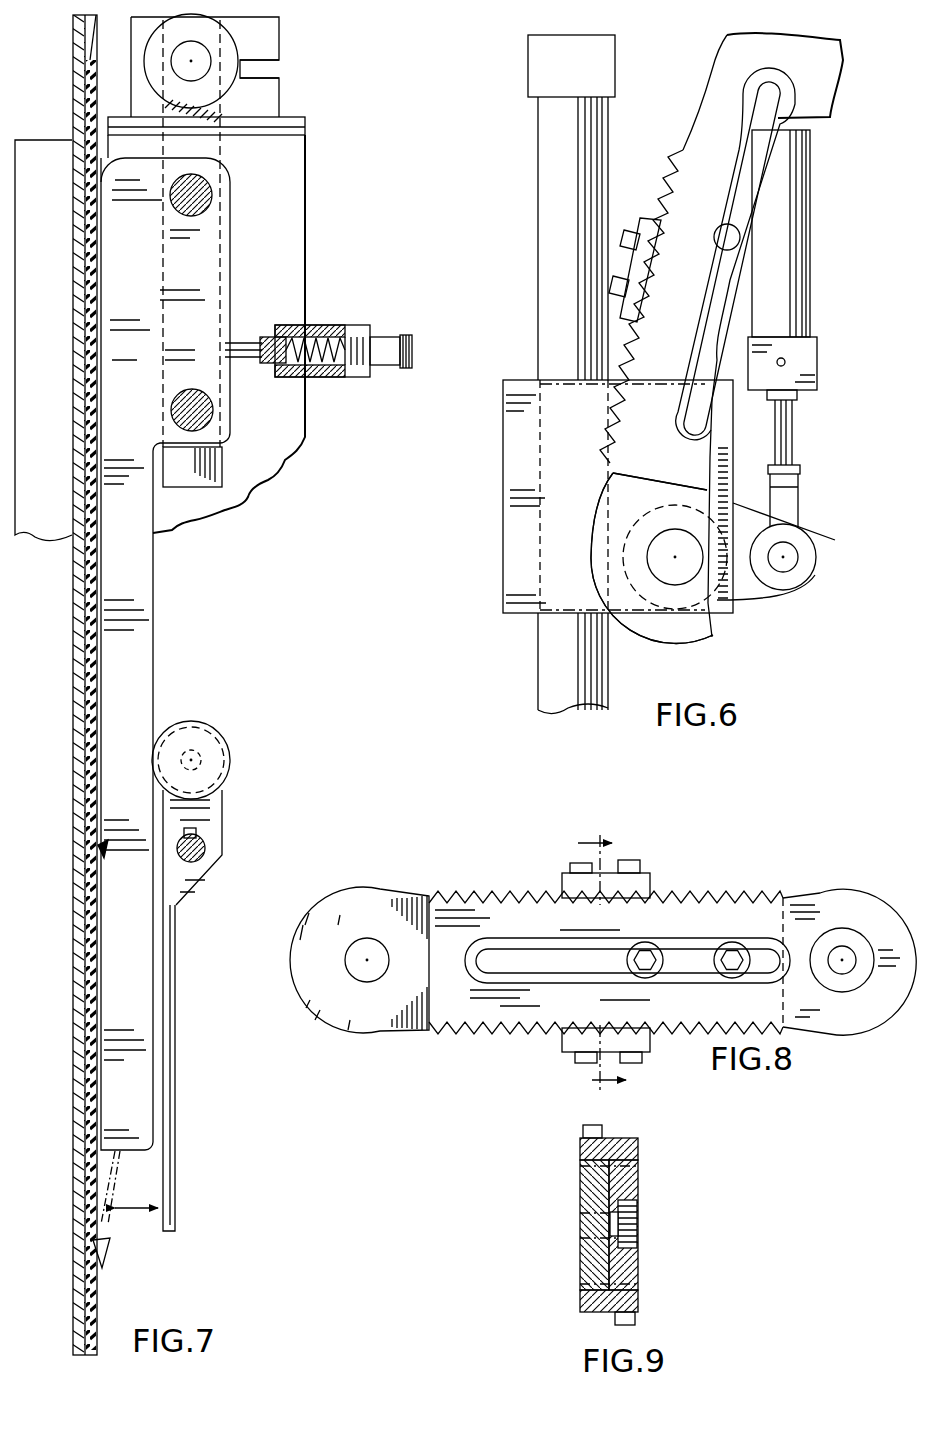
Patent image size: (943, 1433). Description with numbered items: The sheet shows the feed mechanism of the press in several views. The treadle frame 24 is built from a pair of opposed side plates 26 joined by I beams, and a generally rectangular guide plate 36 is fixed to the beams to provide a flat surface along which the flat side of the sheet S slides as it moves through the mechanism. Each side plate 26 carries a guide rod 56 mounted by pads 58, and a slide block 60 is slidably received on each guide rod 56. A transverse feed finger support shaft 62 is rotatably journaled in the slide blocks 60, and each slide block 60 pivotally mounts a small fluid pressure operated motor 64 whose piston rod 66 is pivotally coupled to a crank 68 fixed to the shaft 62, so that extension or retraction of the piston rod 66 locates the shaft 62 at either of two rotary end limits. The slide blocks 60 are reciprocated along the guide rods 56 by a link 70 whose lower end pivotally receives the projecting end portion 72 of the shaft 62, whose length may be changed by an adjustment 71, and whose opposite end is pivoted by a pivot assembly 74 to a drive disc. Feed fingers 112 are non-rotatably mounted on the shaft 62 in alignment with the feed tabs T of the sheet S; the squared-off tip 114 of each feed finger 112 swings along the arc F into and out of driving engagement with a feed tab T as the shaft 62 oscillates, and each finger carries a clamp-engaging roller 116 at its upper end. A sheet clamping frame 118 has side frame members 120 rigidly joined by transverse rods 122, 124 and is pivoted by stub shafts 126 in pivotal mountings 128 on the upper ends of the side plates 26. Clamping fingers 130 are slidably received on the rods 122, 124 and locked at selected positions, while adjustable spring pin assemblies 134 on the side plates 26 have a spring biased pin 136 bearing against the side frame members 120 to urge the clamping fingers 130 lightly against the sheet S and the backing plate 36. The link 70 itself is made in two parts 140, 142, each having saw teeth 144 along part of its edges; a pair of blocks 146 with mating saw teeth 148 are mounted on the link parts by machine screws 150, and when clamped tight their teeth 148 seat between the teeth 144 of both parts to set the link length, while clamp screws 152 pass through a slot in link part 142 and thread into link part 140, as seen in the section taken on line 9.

In FIG. 7, the treadle frame 24 is at (308, 214).
In FIG. 7, the side plate 26 is at (60, 288).
In FIG. 7, the guide plate 36 is at (80, 718).
In FIG. 6, the guide rod 56 is at (548, 300).
In FIG. 6, the pad 58 is at (540, 60).
In FIG. 6, the slide block 60 is at (520, 505).
In FIG. 7, the feed finger support shaft 62 is at (205, 848).
In FIG. 6, the feed finger support shaft 62 is at (668, 578).
In FIG. 8, the feed finger support shaft 62 is at (367, 945).
In FIG. 6, the fluid pressure operated motor 64 is at (802, 280).
In FIG. 6, the piston rod 66 is at (790, 433).
In FIG. 6, the crank 68 is at (748, 588).
In FIG. 6, the link 70 is at (678, 110).
In FIG. 8, the link 70 is at (621, 935).
In FIG. 6, the adjustment means 71 is at (648, 212).
In FIG. 8, the adjustment means 71 is at (646, 873).
In FIG. 6, the end portion of shaft 72 is at (790, 557).
In FIG. 8, the pivot assembly 74 is at (845, 952).
In FIG. 7, the feed finger 112 is at (203, 816).
In FIG. 7, the tip 114 is at (167, 1232).
In FIG. 7, the clamp-engaging roller 116 is at (194, 721).
In FIG. 7, the sheet clamping frame 118 is at (236, 272).
In FIG. 7, the side frame member 120 is at (205, 150).
In FIG. 7, the transversely extending rod 122 is at (181, 205).
In FIG. 7, the transversely extending rod 124 is at (214, 425).
In FIG. 7, the stub shaft 126 is at (200, 60).
In FIG. 7, the pivotal mounting 128 is at (268, 94).
In FIG. 7, the clamping finger 130 is at (136, 588).
In FIG. 7, the adjustable spring pin assembly 134 is at (334, 325).
In FIG. 7, the spring biased pin 136 is at (246, 336).
In FIG. 6, the link part 140 is at (698, 632).
In FIG. 8, the link part 140 is at (380, 1028).
In FIG. 9, the link part 140 is at (585, 1258).
In FIG. 8, the link part 142 is at (852, 1028).
In FIG. 9, the link part 142 is at (632, 1262).
In FIG. 8, the saw teeth 144 is at (487, 897).
In FIG. 8, the block 146 is at (655, 887).
In FIG. 9, the block 146 is at (585, 1145).
In FIG. 8, the mating saw teeth 148 is at (595, 893).
In FIG. 8, the machine screw 150 is at (626, 860).
In FIG. 9, the machine screw 150 is at (604, 1130).
In FIG. 8, the clamp screw 152 is at (733, 952).
In FIG. 9, the clamp screw 152 is at (636, 1218).
In FIG. 8, the section line 9 is at (593, 963).
In FIG. 7, the feed tab T is at (88, 52).
In FIG. 7, the sheet S is at (92, 112).
In FIG. 7, the arc F is at (127, 1207).